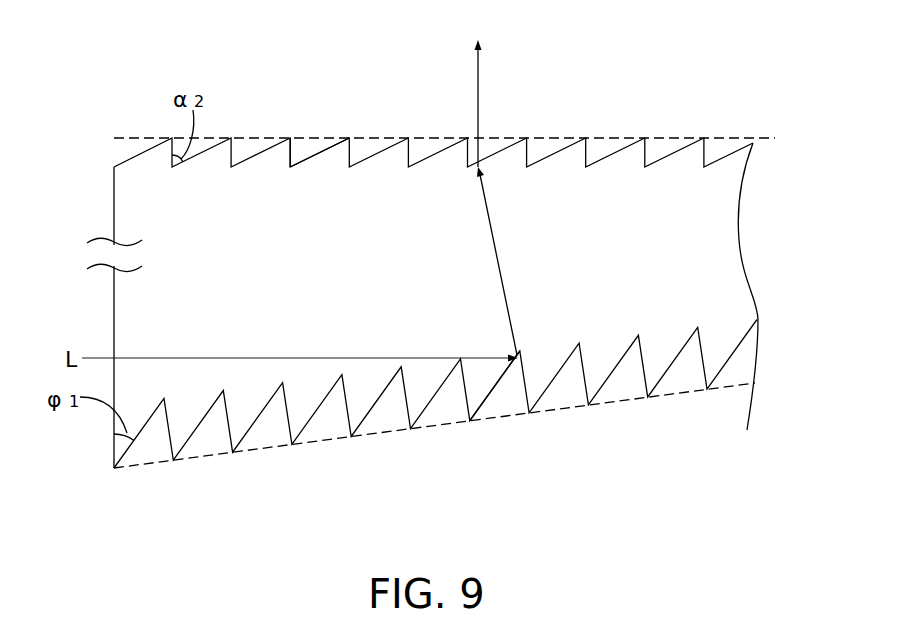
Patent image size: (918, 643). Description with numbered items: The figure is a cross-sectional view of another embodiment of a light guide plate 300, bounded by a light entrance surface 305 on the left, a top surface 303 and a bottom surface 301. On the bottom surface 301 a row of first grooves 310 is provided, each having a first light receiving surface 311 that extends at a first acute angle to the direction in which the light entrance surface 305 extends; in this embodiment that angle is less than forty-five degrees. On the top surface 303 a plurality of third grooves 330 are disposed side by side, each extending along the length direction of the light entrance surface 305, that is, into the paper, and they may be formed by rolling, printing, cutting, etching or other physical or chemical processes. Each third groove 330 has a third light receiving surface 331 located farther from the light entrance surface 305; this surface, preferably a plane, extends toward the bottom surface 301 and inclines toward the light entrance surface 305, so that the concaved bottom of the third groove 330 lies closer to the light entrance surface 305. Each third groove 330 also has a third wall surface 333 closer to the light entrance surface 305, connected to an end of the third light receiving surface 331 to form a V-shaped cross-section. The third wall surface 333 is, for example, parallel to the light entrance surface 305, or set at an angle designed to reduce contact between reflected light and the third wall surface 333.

The light guide plate 300 is at (128, 77).
The bottom surface 301 is at (720, 390).
The top surface 303 is at (469, 139).
The light entrance surface 305 is at (113, 208).
The first groove 310 is at (511, 400).
The first light receiving surface 311 is at (482, 416).
The third groove 330 is at (317, 144).
The third light receiving surface 331 is at (328, 141).
The third wall surface 333 is at (292, 137).